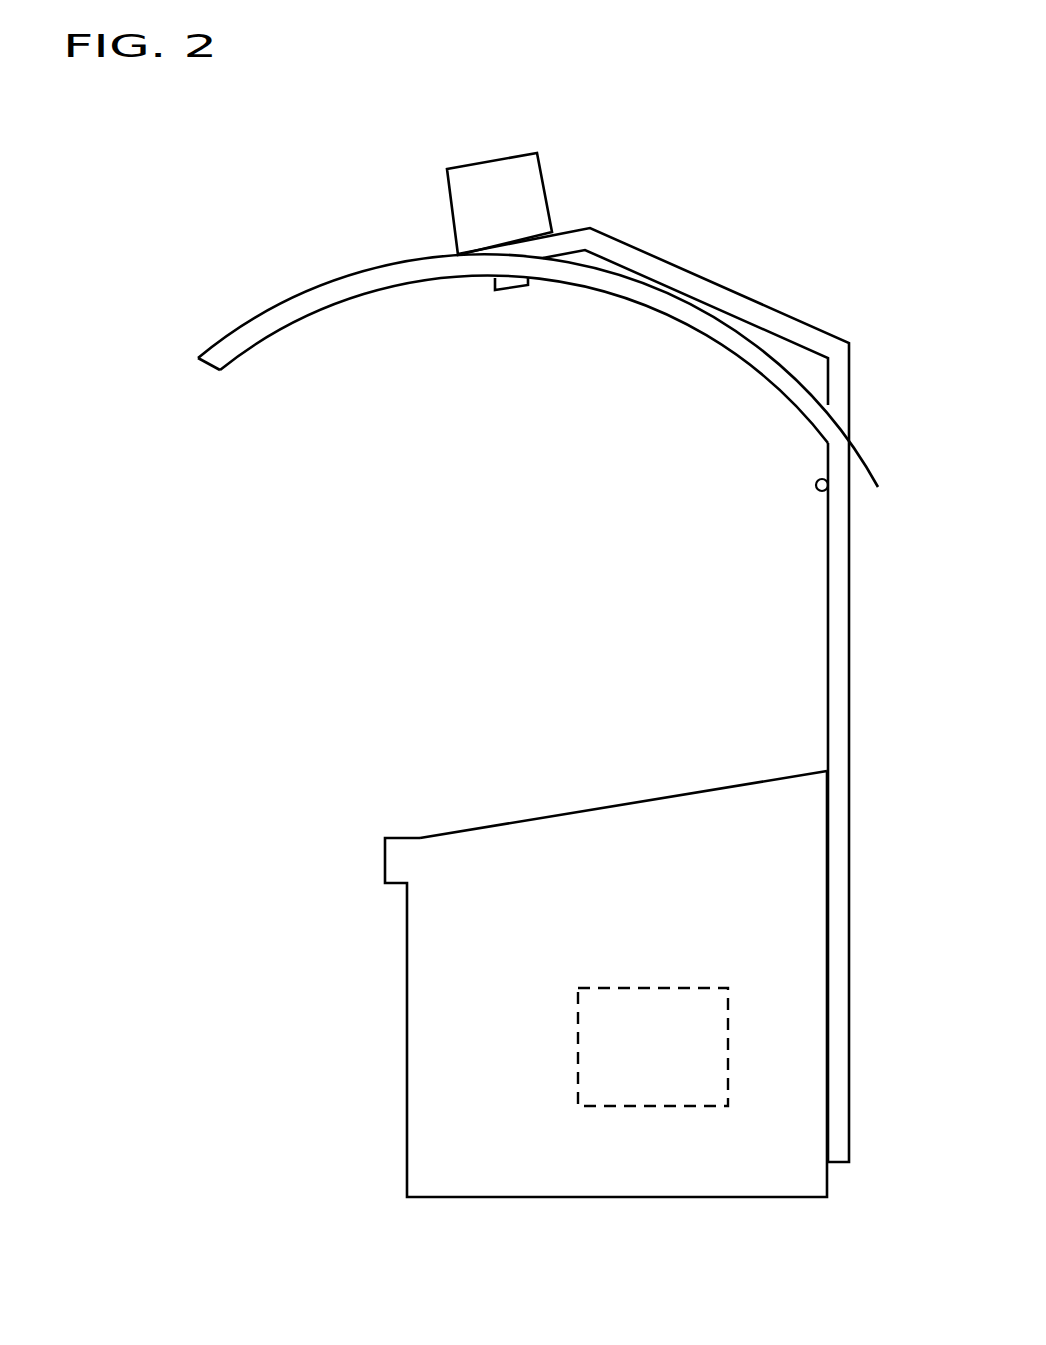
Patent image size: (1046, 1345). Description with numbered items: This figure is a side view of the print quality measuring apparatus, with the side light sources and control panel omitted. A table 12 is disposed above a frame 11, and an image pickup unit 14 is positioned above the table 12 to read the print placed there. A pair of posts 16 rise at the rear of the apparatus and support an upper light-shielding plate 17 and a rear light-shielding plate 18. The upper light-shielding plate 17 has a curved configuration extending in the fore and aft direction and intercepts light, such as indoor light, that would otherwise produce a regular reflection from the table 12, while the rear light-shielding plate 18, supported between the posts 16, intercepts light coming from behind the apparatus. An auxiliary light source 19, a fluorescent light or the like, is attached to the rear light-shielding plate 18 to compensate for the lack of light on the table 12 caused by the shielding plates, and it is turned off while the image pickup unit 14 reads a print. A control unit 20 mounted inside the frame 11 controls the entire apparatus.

The frame 11 is at (437, 1043).
The table 12 is at (658, 797).
The image pickup unit 14 is at (530, 208).
The posts 16 is at (838, 558).
The upper light-shielding plate 17 is at (374, 267).
The rear light-shielding plate 18 is at (826, 602).
The auxiliary light source 19 is at (816, 484).
The control unit 20 is at (627, 1008).